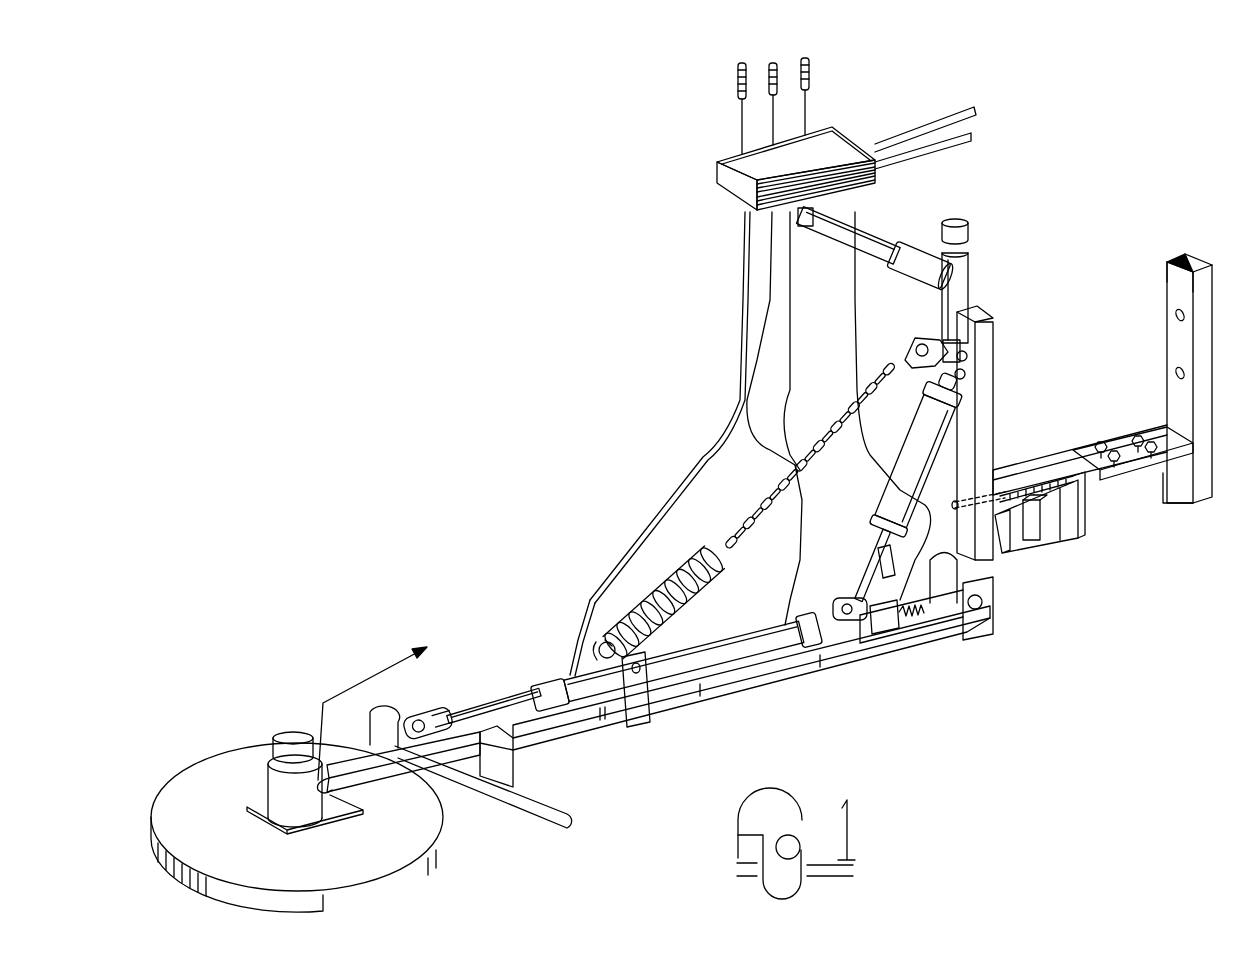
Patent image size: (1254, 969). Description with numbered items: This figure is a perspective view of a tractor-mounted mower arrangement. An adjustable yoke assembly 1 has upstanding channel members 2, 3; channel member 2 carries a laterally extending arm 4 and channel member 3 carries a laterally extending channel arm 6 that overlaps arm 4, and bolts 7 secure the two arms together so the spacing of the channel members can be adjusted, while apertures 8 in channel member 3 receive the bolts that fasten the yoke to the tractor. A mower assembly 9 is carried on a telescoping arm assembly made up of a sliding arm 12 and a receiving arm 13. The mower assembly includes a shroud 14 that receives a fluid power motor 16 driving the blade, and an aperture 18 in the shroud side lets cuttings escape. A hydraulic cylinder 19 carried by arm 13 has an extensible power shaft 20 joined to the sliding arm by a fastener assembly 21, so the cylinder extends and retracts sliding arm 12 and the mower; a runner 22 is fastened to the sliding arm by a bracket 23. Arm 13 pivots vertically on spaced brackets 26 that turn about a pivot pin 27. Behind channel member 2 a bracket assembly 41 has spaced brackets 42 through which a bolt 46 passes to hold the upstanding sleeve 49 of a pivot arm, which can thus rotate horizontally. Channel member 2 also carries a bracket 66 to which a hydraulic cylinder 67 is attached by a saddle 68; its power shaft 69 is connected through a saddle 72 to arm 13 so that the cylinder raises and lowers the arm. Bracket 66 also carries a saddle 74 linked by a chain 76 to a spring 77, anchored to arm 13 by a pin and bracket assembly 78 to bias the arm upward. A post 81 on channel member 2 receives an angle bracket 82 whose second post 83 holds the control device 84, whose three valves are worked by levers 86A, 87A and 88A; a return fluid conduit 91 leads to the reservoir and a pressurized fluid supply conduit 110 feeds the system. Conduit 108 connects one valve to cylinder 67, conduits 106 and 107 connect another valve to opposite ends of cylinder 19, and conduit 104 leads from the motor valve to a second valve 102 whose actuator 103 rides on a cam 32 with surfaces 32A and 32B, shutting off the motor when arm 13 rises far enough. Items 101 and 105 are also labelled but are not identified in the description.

The adjustable yoke assembly 1 is at (1167, 383).
The upstanding channel member 2 is at (990, 320).
The upstanding channel member 3 is at (1196, 262).
The laterally extending arm 4 is at (1030, 468).
The laterally extending channel arm 6 is at (1152, 470).
The bolts 7 is at (1102, 442).
The apertures 8 is at (1178, 368).
The mower assembly 9 is at (314, 806).
The sliding arm 12 is at (565, 725).
The receiving arm 13 is at (735, 683).
The shroud 14 is at (440, 820).
The fluid power motor 16 is at (297, 740).
The aperture 18 is at (395, 893).
The hydraulic cylinder 19 is at (750, 650).
The extensible power shaft 20 is at (500, 705).
The fastener assembly 21 is at (425, 715).
The runner 22 is at (570, 815).
The bracket 23 is at (520, 760).
The spaced aligned brackets 26 is at (958, 578).
The pivot pin 27 is at (983, 601).
The cam 32 is at (993, 620).
The cam surface 32A is at (965, 640).
The cam surface 32B is at (882, 560).
The bracket assembly 41 is at (1030, 552).
The spaced bracket 42 is at (1075, 490).
The bolt 46 is at (1040, 530).
The upstanding sleeve 49 is at (1082, 530).
The bracket 66 is at (968, 358).
The hydraulic cylinder 67 is at (915, 420).
The saddle 68 is at (968, 375).
The power shaft 69 is at (845, 568).
The saddle 72 is at (850, 600).
The saddle 74 is at (905, 350).
The chain 76 is at (832, 422).
The spring 77 is at (692, 555).
The pin and bracket assembly 78 is at (587, 630).
The post 81 is at (960, 222).
The angle bracket 82 is at (968, 257).
The second post 83 is at (888, 240).
The control device 84 is at (855, 145).
The lever 86A is at (742, 62).
The lever 87A is at (773, 62).
The lever 88A is at (806, 60).
The return fluid conduit 91 is at (952, 110).
The channel 101 is at (815, 672).
The second valve 102 is at (885, 632).
The actuator 103 is at (912, 620).
The conduit 104 is at (955, 503).
The direction arrow 105 is at (392, 653).
The fluid flow conduit 106 is at (800, 557).
The fluid flow conduit 107 is at (700, 455).
The conduit 108 is at (770, 345).
The pressurized fluid supply conduit 110 is at (940, 140).